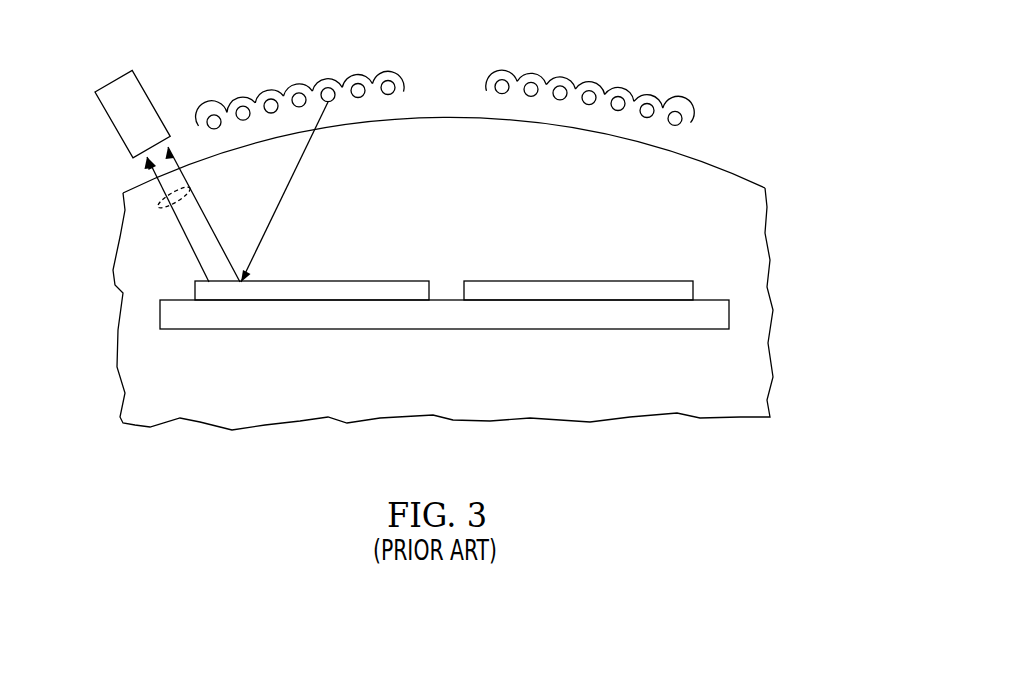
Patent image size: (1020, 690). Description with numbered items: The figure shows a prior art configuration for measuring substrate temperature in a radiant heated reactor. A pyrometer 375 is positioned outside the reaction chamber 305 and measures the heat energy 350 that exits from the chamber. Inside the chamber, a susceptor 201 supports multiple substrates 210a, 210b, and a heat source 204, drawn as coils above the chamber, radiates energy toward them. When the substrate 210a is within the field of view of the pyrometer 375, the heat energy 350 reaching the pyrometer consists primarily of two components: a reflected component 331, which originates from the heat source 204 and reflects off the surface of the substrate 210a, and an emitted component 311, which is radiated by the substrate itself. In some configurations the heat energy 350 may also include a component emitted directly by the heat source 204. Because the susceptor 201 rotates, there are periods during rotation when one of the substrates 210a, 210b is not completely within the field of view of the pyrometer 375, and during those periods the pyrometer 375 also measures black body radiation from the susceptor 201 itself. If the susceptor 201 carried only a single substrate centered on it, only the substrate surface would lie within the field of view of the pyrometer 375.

The susceptor 201 is at (693, 318).
The heat source 204 is at (497, 72).
The substrate 210a is at (378, 280).
The substrate 210b is at (638, 278).
The reaction chamber 305 is at (703, 182).
The emitted component 311 is at (182, 240).
The reflected component 331 is at (207, 222).
The heat energy 350 is at (192, 188).
The pyrometer 375 is at (141, 83).